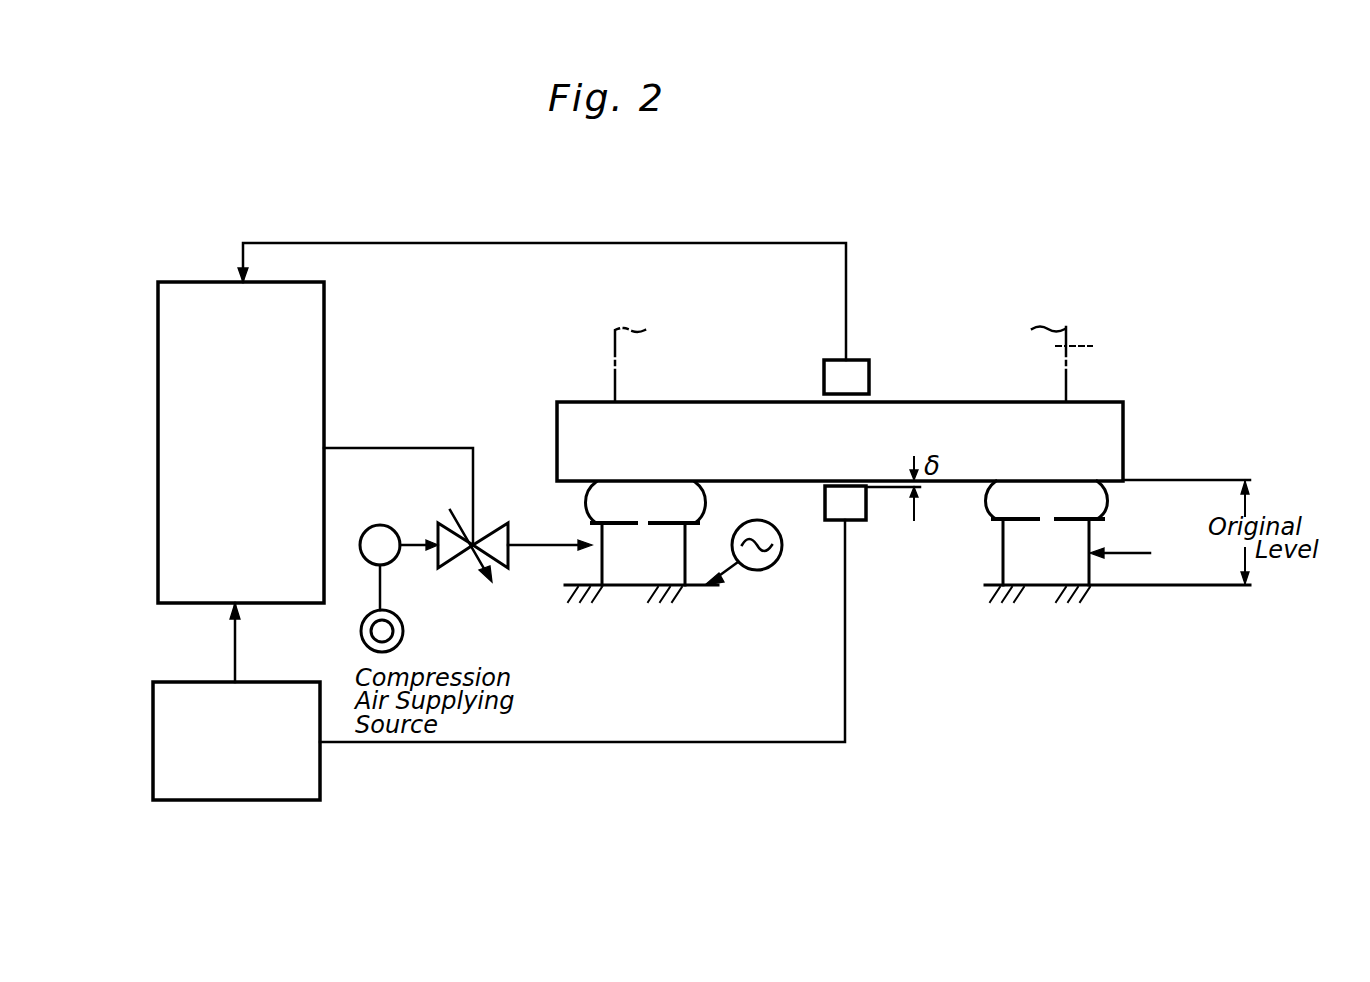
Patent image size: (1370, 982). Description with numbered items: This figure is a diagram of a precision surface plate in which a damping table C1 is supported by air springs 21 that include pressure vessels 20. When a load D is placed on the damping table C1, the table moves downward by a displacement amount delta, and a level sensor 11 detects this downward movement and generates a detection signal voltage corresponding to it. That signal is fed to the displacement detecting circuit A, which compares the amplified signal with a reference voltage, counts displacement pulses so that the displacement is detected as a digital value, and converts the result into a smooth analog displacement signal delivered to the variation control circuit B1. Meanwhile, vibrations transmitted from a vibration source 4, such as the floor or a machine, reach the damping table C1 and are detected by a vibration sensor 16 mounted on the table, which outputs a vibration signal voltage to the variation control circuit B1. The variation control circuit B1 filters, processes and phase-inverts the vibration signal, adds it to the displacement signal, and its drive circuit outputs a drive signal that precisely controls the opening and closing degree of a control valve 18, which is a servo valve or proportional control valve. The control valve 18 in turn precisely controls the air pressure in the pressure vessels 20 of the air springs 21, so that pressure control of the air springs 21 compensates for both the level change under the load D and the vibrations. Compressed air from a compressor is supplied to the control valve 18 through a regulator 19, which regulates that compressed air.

The vibration source 4 is at (770, 569).
The level sensor 11 is at (857, 520).
The vibration sensor 16 is at (865, 360).
The control valve 18 is at (453, 562).
The regulator 19 is at (366, 528).
The pressure vessels 20 is at (1046, 575).
The air springs 21 is at (1092, 491).
The displacement detecting circuit A is at (320, 777).
The variation control circuit B1 is at (324, 300).
The damping table C1 is at (700, 402).
The load D is at (1100, 348).